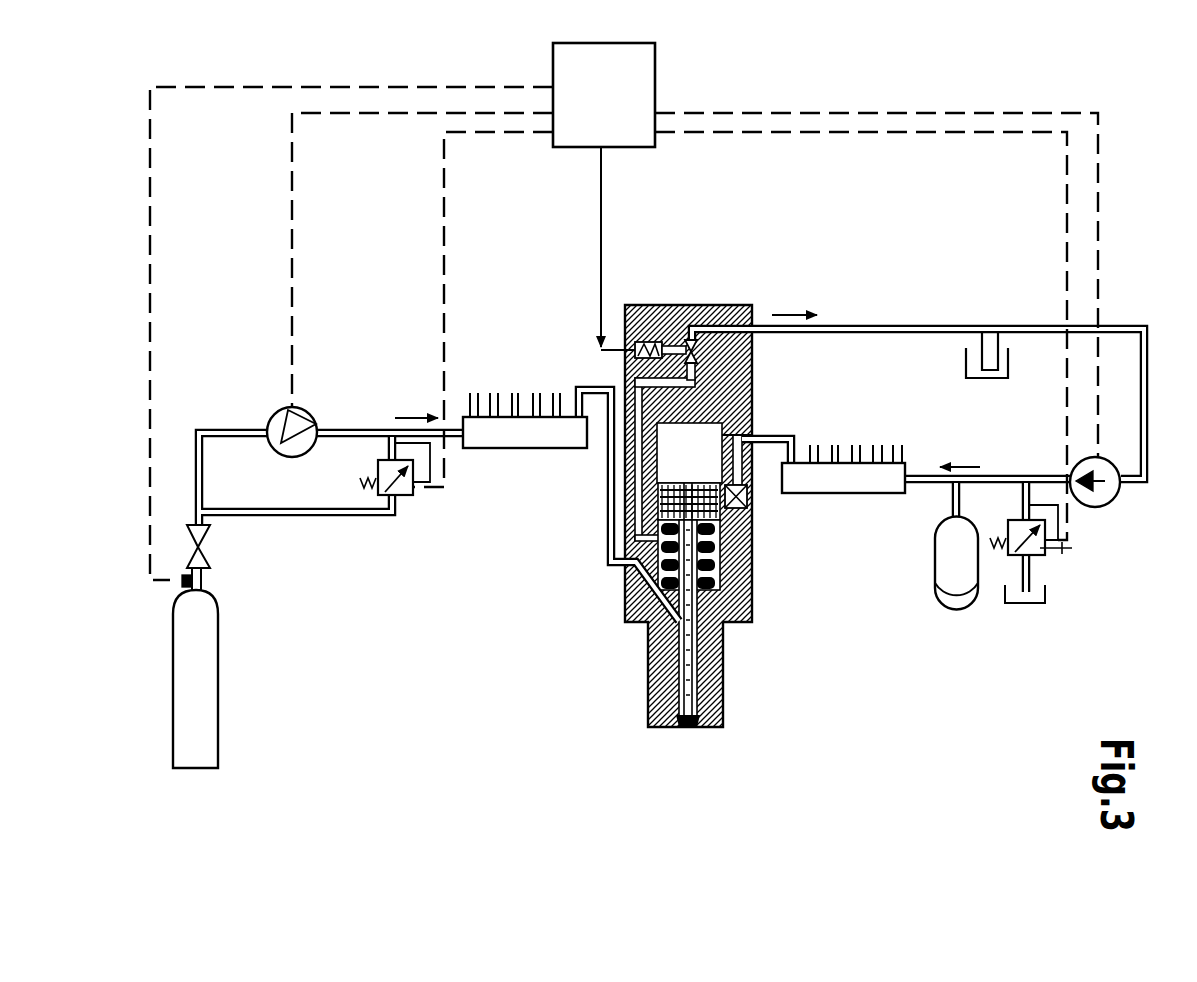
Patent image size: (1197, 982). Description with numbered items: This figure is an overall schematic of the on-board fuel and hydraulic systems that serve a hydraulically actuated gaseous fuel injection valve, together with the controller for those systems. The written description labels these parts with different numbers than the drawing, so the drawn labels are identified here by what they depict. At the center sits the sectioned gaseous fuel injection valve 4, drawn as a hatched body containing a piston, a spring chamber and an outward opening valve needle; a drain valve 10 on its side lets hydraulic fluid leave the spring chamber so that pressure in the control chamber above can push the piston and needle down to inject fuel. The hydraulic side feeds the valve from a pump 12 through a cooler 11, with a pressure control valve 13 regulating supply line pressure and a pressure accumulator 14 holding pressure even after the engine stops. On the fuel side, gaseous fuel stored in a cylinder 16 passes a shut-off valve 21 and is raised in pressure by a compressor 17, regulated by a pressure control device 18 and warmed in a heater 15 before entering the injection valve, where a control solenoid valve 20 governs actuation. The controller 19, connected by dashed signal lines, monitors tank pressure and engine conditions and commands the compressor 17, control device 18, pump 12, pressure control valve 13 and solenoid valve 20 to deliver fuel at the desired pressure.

The fuel injector 4 is at (732, 600).
The control valve 10 is at (746, 517).
The cooler 11 is at (876, 493).
The pump 12 is at (1103, 500).
The pressure regulating valve 13 is at (1045, 550).
The accumulator 14 is at (935, 592).
The heater 15 is at (540, 430).
The gas cylinder 16 is at (196, 680).
The pump 17 is at (293, 408).
The pressure regulating valve 18 is at (402, 497).
The control unit 19 is at (623, 102).
The control valve 20 is at (652, 340).
The shut-off valve 21 is at (180, 583).